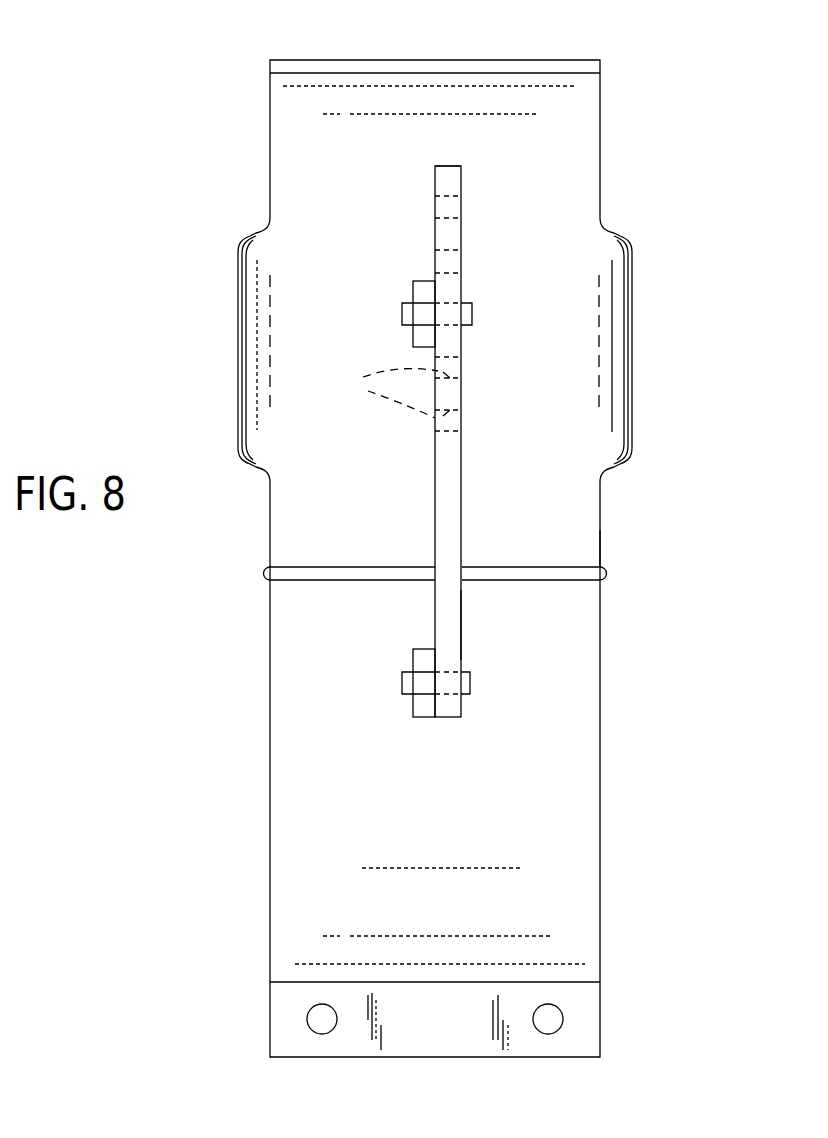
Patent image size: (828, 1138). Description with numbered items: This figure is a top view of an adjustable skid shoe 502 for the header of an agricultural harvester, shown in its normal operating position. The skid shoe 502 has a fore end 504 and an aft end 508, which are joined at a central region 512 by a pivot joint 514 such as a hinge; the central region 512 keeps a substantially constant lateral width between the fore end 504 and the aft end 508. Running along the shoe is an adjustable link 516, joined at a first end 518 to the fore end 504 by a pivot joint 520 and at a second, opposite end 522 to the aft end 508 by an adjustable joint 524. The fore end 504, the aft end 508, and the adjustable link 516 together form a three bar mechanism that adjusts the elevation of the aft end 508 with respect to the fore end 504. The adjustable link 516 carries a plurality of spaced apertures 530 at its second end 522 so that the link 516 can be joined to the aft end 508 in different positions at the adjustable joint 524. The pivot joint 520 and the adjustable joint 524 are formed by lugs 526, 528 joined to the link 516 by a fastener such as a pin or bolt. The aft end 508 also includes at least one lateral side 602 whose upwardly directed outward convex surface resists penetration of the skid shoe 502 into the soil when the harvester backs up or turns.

The skid shoe 502 is at (210, 52).
The fore end 504 is at (607, 888).
The aft end 508 is at (618, 204).
The central region 512 is at (624, 538).
The pivot joint 514 is at (605, 575).
The adjustable link 516 is at (435, 497).
The first end 518 is at (463, 628).
The pivot joint 520 is at (448, 731).
The second end 522 is at (452, 165).
The adjustable joint 524 is at (496, 327).
The lug 526 is at (425, 718).
The lug 528 is at (414, 292).
The spaced apertures 530 is at (383, 393).
The lateral side 602 is at (238, 316).